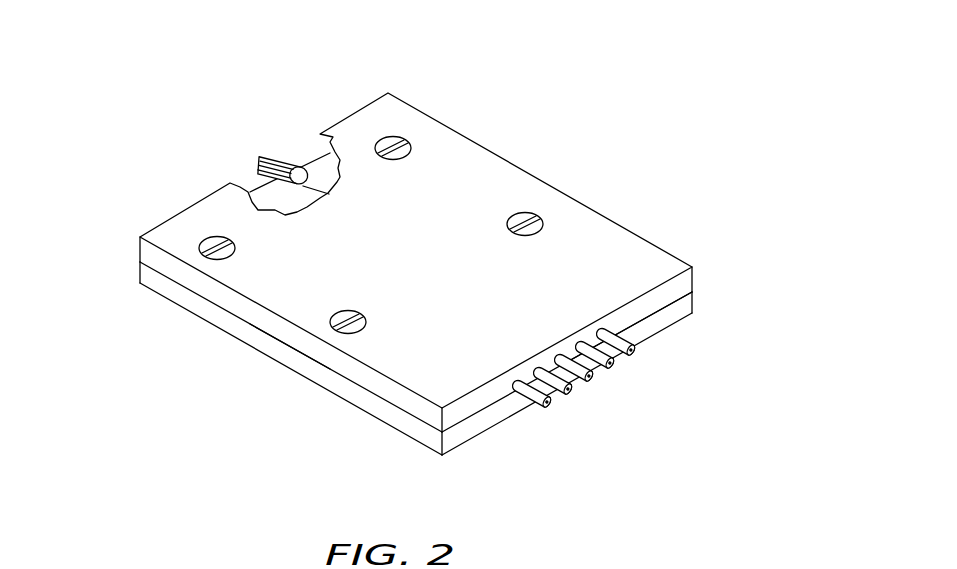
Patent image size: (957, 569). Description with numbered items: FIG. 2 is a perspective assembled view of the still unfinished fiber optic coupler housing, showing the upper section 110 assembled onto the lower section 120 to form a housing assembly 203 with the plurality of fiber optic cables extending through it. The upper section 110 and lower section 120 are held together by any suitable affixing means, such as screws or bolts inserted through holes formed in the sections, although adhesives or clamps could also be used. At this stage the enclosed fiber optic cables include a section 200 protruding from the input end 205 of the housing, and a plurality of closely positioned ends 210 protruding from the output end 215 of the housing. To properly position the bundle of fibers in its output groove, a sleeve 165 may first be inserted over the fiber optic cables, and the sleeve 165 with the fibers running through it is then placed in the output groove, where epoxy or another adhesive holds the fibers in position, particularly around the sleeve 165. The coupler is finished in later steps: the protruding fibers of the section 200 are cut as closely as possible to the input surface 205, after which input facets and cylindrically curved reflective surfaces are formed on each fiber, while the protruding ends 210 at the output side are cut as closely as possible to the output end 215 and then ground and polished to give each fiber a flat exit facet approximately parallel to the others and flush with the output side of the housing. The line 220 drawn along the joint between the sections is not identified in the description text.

The upper section 110 is at (396, 219).
The lower section 120 is at (148, 275).
The sleeve 165 is at (302, 182).
The protruding section of fiber optic cables 200 is at (638, 353).
The housing assembly 203 is at (442, 235).
The input end 205 is at (738, 295).
The closely positioned fiber ends 210 is at (261, 160).
The output end 215 is at (308, 100).
The seam between plates 220 is at (293, 348).